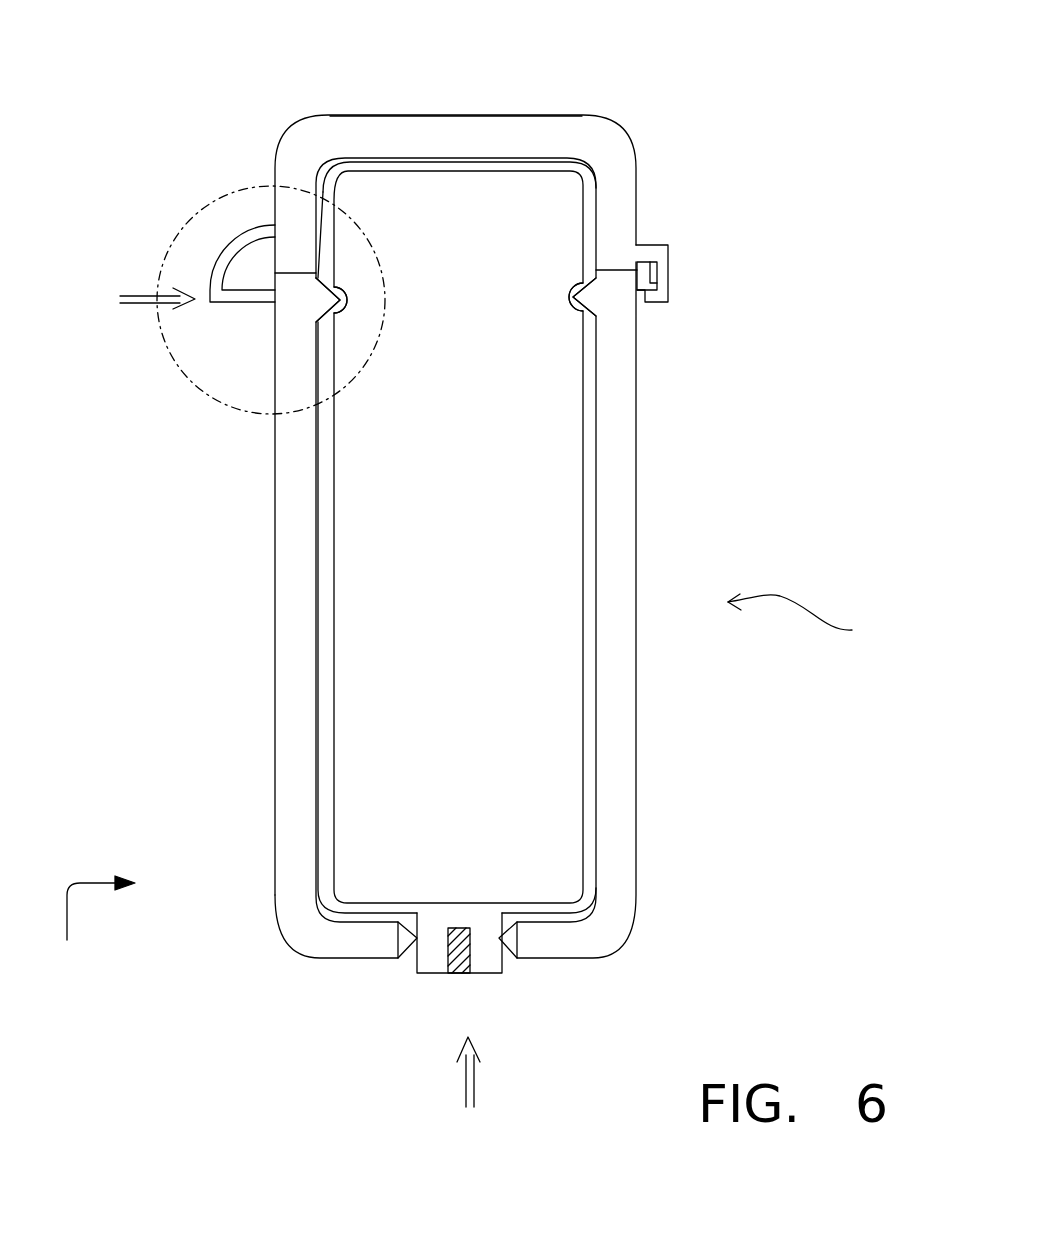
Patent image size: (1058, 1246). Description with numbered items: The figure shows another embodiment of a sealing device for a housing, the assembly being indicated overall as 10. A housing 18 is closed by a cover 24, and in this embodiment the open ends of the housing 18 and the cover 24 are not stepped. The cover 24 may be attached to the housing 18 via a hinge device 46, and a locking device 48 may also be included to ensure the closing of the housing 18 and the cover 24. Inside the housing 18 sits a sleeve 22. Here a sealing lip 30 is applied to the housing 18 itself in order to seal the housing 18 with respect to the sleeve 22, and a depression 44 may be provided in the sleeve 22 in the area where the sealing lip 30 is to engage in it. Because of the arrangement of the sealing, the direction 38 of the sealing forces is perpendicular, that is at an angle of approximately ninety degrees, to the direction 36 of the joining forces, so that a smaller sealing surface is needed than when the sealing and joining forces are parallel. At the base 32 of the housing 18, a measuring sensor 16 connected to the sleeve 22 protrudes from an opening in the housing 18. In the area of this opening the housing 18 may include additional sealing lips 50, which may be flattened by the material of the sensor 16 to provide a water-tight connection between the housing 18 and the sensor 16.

The holder 10 is at (813, 620).
The measuring sensor 16 is at (432, 975).
The housing 18 is at (625, 672).
The sleeve 22 is at (530, 750).
The cover 24 is at (588, 143).
The sealing lip 30 is at (323, 300).
The base 32 is at (82, 933).
The direction of the joining forces 36 is at (491, 1079).
The direction of the sealing forces 38 is at (131, 301).
The depression 44 is at (572, 297).
The hinge device 46 is at (660, 273).
The locking device 48 is at (229, 243).
The additional sealing lips 50 is at (408, 943).